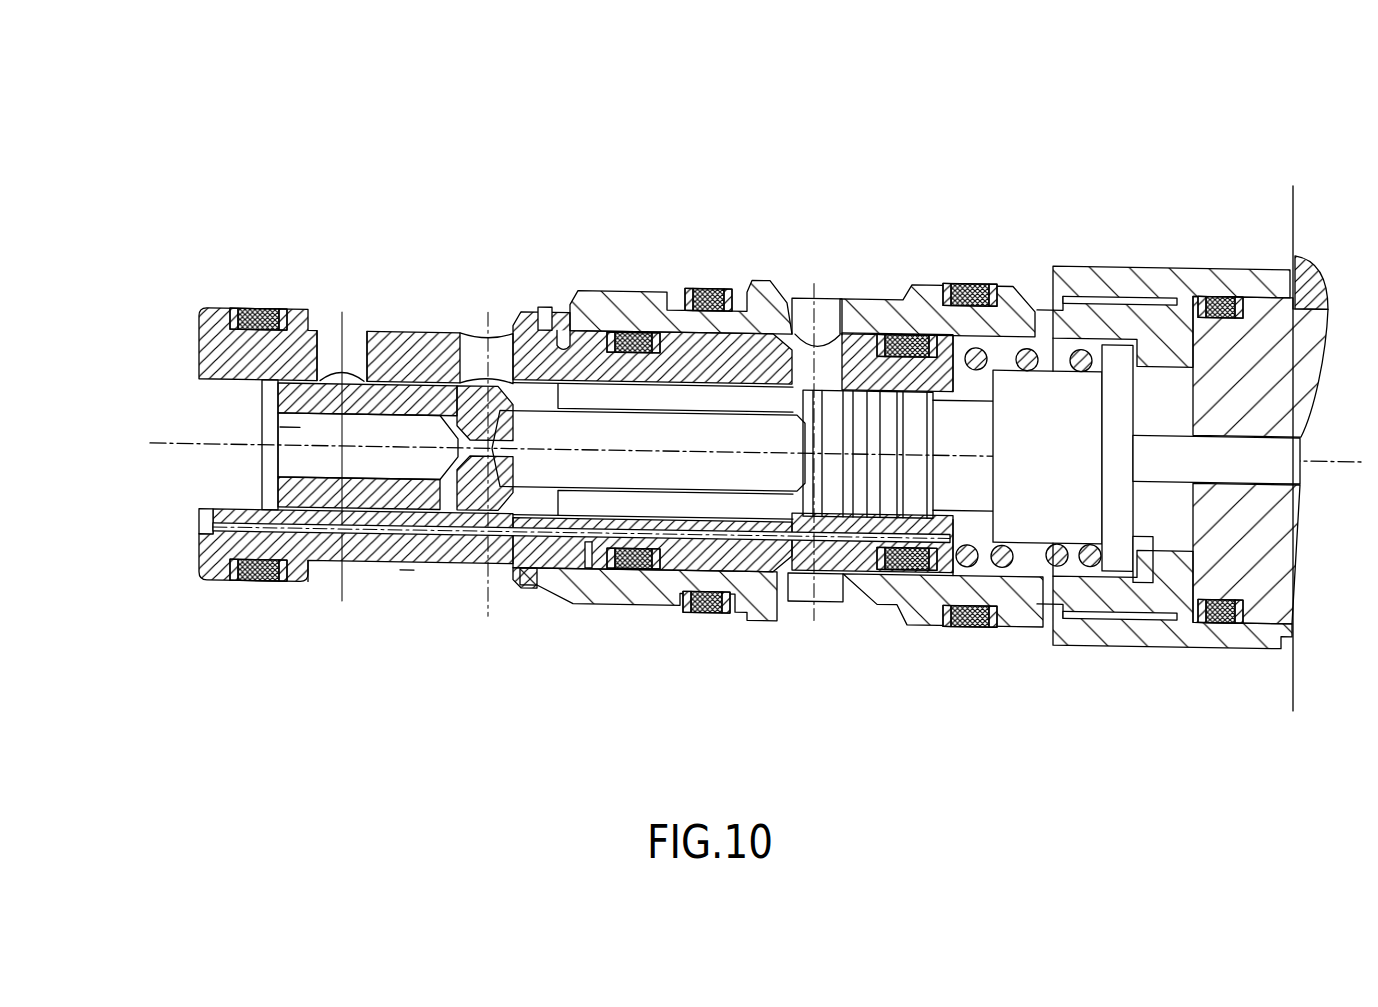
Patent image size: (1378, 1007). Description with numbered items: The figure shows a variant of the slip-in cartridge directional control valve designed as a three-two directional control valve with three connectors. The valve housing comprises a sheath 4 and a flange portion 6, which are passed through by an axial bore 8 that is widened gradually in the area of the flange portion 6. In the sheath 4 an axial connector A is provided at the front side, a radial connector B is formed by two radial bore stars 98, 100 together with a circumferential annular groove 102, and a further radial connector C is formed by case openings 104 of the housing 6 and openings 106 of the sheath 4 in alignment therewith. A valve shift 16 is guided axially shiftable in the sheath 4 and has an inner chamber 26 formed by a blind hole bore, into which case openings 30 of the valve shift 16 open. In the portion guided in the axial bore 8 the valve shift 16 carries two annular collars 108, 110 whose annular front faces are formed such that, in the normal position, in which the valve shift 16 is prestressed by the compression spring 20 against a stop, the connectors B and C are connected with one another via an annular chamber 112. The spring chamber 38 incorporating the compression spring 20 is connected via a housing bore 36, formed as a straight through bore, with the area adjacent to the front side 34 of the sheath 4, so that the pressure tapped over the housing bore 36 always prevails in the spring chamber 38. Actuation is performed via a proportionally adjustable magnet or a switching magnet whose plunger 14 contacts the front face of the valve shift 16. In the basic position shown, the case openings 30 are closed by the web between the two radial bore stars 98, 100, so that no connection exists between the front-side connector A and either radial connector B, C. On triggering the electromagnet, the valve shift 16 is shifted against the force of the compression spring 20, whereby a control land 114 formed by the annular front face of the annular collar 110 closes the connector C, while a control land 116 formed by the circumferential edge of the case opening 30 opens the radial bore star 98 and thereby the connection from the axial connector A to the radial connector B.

The sheath 4 is at (303, 303).
The flange portion 6 is at (920, 300).
The axial bore 8 is at (250, 303).
The plunger 14 is at (1180, 448).
The valve shift 16 is at (1042, 310).
The compression spring 20 is at (1007, 572).
The inner chamber 26 is at (267, 427).
The case openings 30 is at (435, 320).
The front side 34 is at (190, 320).
The housing bore 36 is at (587, 560).
The spring chamber 38 is at (1003, 358).
The radial bore star 98 is at (360, 320).
The radial bore star 100 is at (500, 320).
The circumferential annular groove 102 is at (317, 573).
The case openings 104 is at (843, 320).
The openings 106 is at (805, 335).
The annular collar 108 is at (475, 560).
The annular collar 110 is at (877, 603).
The annular chamber 112 is at (668, 395).
The control land 114 is at (797, 603).
The control land 116 is at (378, 567).
The axial connector A is at (215, 478).
The radial connector B is at (407, 570).
The radial connector C is at (797, 605).